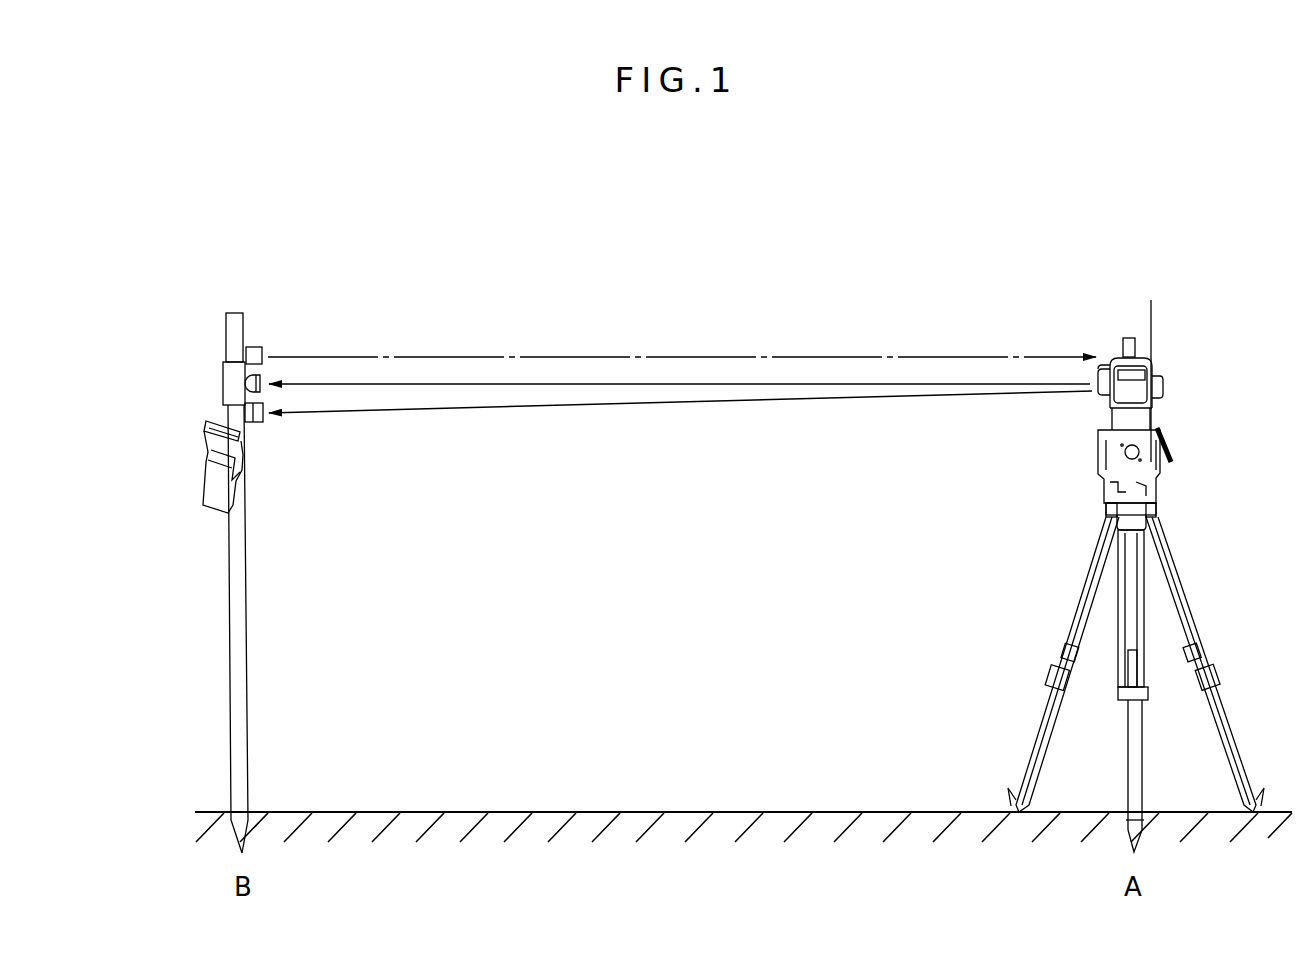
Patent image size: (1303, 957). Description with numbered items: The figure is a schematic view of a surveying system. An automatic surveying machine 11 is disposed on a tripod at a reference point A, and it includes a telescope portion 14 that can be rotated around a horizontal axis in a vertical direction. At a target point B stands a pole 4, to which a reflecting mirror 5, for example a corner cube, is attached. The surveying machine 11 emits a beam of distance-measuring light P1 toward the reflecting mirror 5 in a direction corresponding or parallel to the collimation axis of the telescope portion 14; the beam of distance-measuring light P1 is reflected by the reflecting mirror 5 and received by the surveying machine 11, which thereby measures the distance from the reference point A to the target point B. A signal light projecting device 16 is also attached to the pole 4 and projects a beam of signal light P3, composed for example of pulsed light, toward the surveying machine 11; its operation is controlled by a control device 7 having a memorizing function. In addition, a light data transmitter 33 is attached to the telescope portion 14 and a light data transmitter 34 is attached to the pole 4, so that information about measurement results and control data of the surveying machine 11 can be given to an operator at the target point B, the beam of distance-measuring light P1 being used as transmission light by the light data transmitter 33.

The pole 4 is at (245, 645).
The reflecting mirror 5 is at (261, 376).
The control device 7 is at (210, 458).
The automatic surveying machine 11 is at (1165, 427).
The telescope portion 14 is at (1096, 397).
The signal light projecting device 16 is at (261, 347).
The light data transmitter 33 is at (1097, 388).
The light data transmitter 34 is at (263, 422).
The beam of distance-measuring light P1 is at (718, 384).
The beam of signal light P3 is at (640, 355).